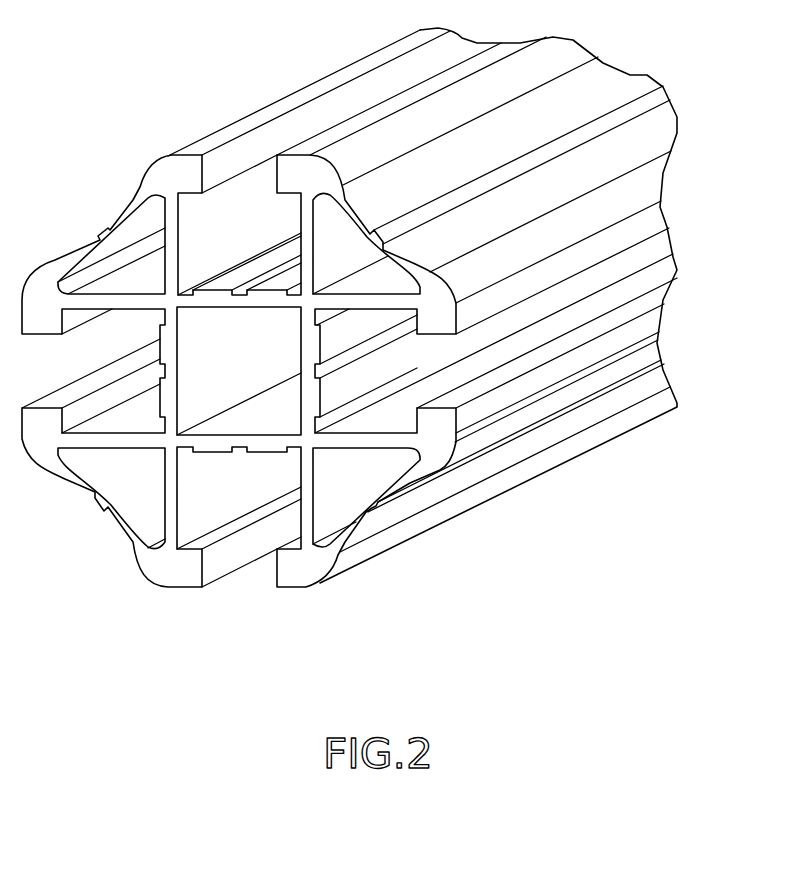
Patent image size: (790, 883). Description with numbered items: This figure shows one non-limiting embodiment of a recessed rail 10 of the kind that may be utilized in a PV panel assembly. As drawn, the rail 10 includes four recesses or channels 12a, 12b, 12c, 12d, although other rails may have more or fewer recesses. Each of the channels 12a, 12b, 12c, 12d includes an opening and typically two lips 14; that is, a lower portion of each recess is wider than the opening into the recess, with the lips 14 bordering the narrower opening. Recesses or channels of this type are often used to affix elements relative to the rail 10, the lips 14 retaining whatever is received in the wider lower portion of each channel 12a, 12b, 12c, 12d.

The recessed rail 10 is at (110, 545).
The channel 12a is at (254, 227).
The channel 12b is at (82, 371).
The channel 12c is at (235, 506).
The channel 12d is at (390, 384).
The lips 14 is at (280, 573).